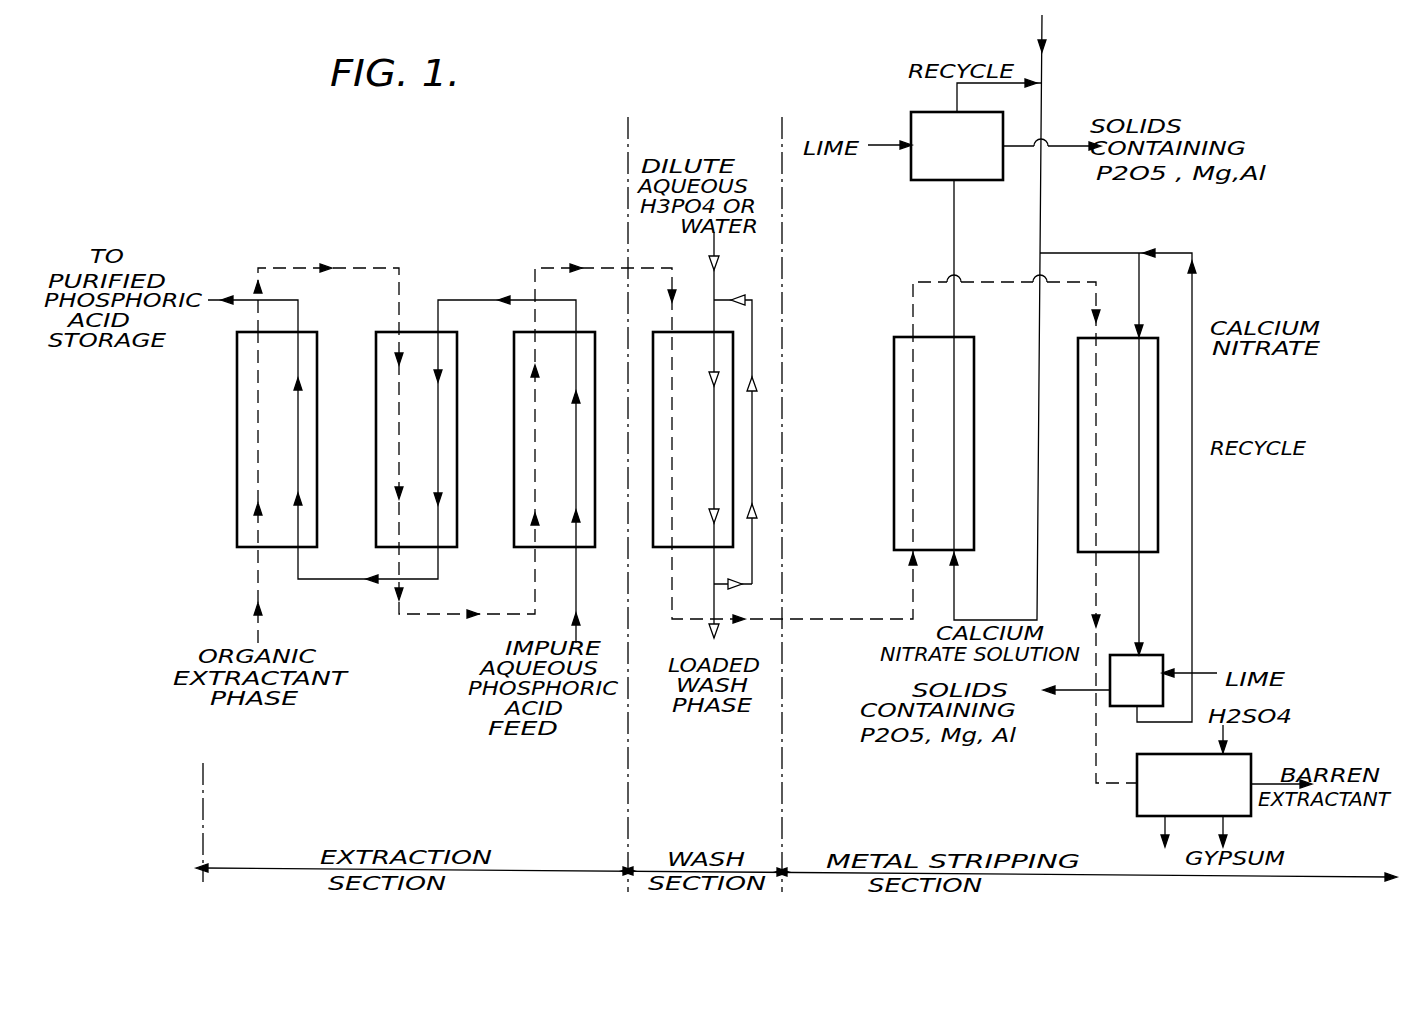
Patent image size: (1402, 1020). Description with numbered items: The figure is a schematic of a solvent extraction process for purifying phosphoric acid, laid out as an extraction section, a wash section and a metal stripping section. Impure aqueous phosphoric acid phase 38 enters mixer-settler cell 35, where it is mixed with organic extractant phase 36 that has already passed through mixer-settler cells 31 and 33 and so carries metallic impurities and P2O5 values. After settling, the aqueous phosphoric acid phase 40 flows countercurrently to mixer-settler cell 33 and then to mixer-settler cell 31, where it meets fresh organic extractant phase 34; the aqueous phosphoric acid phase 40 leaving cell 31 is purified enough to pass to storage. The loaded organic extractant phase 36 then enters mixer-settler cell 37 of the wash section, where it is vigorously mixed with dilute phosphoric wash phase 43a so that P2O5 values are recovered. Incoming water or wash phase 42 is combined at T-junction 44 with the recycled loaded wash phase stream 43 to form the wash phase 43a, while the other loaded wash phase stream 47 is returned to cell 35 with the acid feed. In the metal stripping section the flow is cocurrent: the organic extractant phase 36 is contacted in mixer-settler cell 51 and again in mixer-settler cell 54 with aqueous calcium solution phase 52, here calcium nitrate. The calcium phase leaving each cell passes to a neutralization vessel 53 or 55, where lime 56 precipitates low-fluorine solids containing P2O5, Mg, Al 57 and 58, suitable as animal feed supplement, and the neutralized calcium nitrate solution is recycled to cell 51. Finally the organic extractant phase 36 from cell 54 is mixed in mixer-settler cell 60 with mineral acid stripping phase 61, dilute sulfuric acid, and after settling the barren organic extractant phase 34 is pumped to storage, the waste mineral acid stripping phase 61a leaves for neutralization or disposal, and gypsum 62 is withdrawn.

The mixer-settler cell 31 is at (233, 446).
The mixer-settler cell 33 is at (374, 442).
The organic extractant phase 34 is at (258, 562).
The mixer-settler cell 35 is at (512, 438).
The organic extractant phase 36 is at (258, 320).
The mixer-settler cell 37 is at (651, 536).
The aqueous phosphoric acid phase 38 is at (577, 602).
The aqueous phosphoric acid phase 40 is at (252, 296).
The wash phase 42 is at (714, 245).
The loaded wash phase stream 43 is at (719, 584).
The dilute phosphoric wash phase 43a is at (713, 326).
The T-junction 44 is at (717, 299).
The loaded wash phase stream 47 is at (713, 633).
The mixer-settler cell 51 is at (892, 472).
The calcium solution phase 52 is at (1042, 22).
The neutralization vessel 53 is at (920, 111).
The mixer-settler cell 54 is at (1076, 462).
The neutralization vessel 55 is at (1150, 655).
The lime 56 is at (880, 147).
The solids containing P2O5, Mg, Al 57 is at (1052, 145).
The solids containing P2O5, Mg, Al 58 is at (1076, 692).
The mixer-settler cell 60 is at (1137, 808).
The mineral acid stripping phase 61 is at (1216, 740).
The waste mineral acid stripping phase 61a is at (1165, 826).
The gypsum 62 is at (1232, 826).